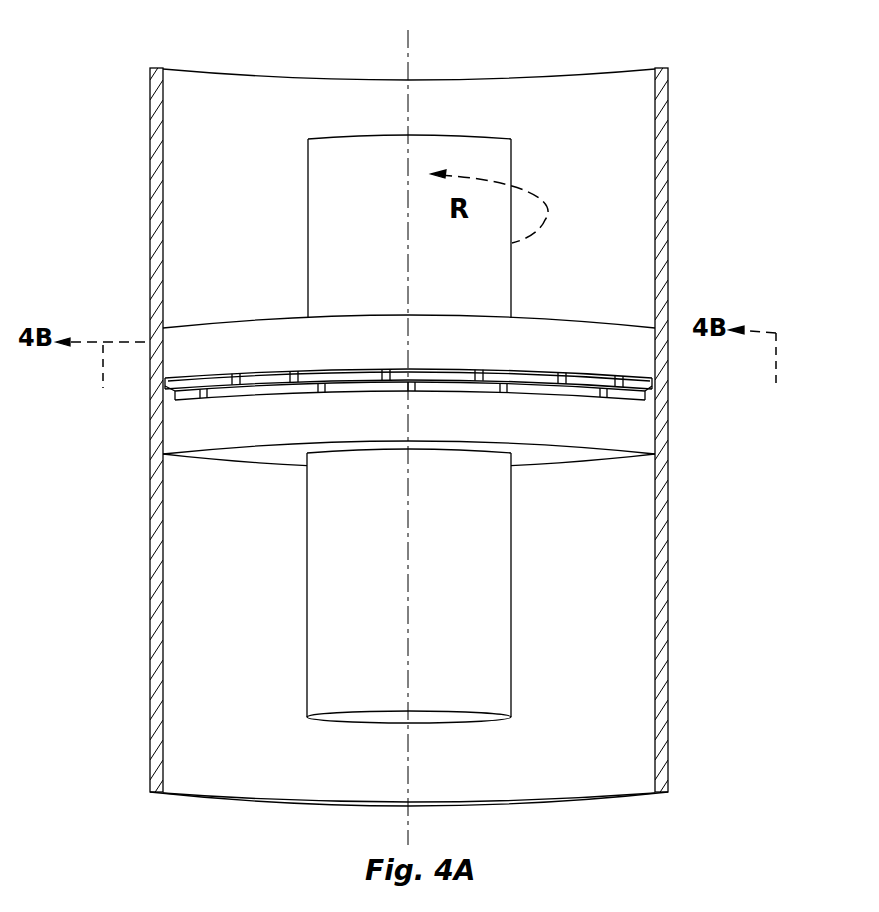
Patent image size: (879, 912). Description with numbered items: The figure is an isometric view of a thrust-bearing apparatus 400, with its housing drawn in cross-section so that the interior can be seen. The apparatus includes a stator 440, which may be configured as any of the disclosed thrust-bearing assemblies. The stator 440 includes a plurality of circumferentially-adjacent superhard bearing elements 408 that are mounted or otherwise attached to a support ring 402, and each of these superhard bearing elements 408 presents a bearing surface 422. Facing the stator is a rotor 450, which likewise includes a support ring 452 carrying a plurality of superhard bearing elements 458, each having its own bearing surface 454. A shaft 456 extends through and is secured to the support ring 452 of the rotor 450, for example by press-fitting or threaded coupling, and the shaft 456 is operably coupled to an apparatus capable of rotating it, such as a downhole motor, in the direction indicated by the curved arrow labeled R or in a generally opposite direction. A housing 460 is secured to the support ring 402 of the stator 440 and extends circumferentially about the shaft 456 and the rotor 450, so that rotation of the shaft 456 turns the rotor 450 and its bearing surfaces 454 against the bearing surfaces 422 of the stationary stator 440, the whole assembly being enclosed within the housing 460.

The thrust-bearing apparatus 400 is at (733, 41).
The housing 460 is at (668, 143).
The shaft 456 is at (320, 230).
The superhard bearing elements 458 is at (278, 372).
The bearing surface 454 is at (263, 382).
The support ring 452 is at (178, 366).
The rotor 450 is at (660, 356).
The support ring 402 is at (660, 421).
The superhard bearing elements 408 is at (568, 397).
The bearing surface 422 is at (537, 395).
The stator 440 is at (544, 467).